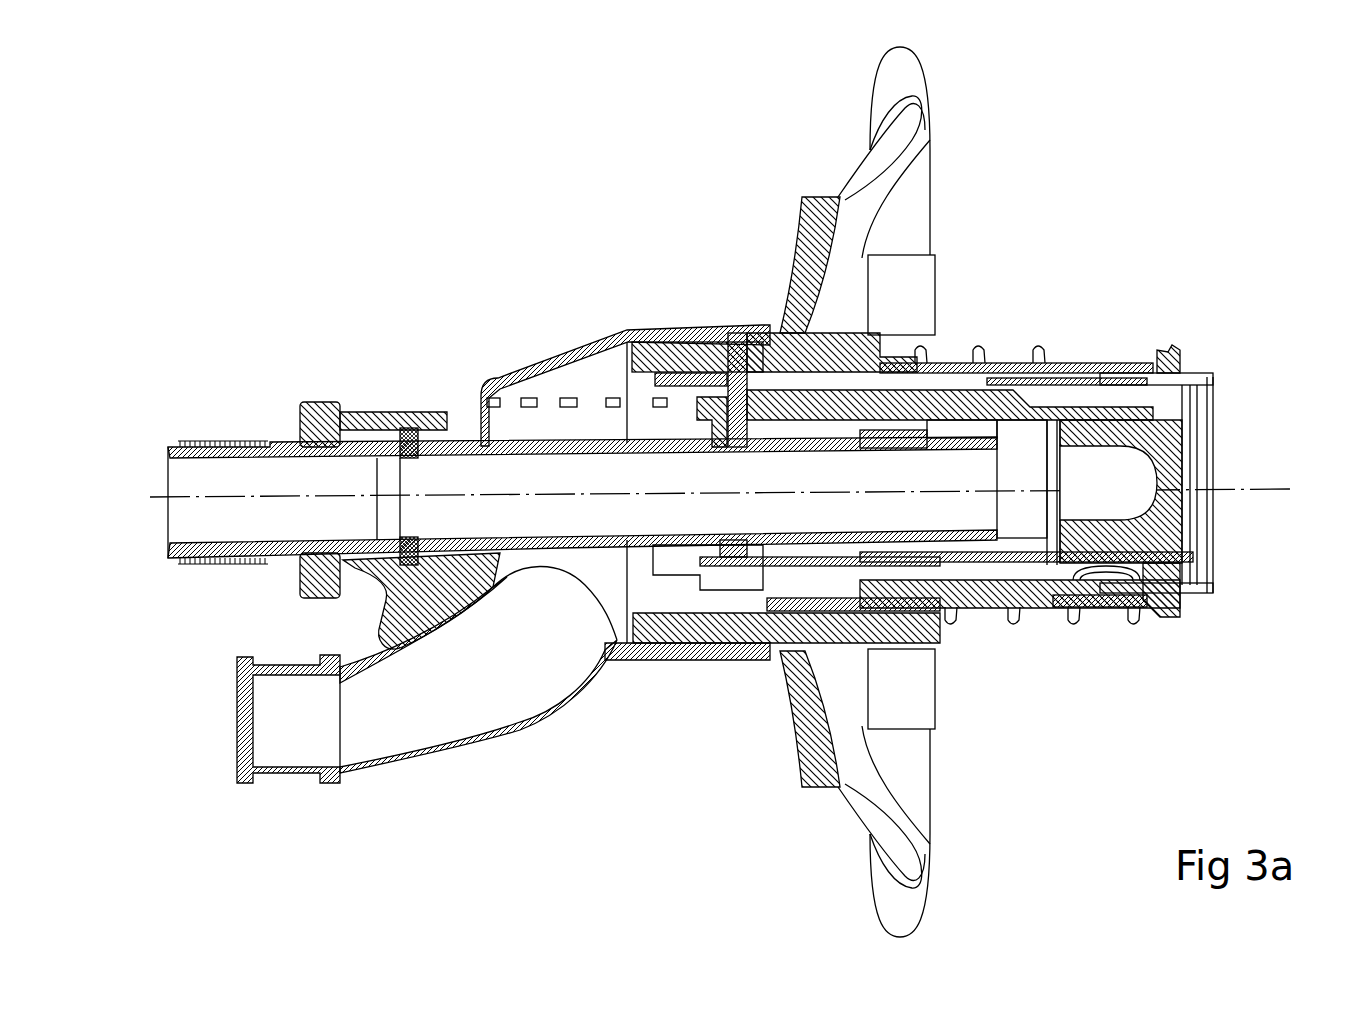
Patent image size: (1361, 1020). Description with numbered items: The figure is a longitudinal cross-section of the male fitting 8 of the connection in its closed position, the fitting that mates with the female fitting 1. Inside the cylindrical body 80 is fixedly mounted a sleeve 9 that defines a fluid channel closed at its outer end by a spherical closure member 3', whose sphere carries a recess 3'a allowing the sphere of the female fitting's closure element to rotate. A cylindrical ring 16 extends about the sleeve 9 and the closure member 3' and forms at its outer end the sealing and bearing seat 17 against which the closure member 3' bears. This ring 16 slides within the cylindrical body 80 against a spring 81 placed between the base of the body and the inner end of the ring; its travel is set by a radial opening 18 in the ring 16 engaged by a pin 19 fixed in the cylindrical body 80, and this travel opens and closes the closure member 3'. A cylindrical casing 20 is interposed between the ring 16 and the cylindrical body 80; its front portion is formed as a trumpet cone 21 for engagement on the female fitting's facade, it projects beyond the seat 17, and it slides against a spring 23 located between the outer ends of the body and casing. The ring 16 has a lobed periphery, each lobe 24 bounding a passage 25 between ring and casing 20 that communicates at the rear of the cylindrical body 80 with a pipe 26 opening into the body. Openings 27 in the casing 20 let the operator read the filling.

The female fitting 1 is at (480, 477).
The male fitting 8 is at (598, 256).
The sleeve 9 is at (520, 443).
The spring 81 is at (572, 395).
The pin 19 is at (732, 365).
The opening 18 is at (745, 337).
The spring 23 is at (862, 178).
The lobe 24 is at (960, 395).
The openings 27 is at (1075, 370).
The cylindrical casing 20 is at (1118, 390).
The trumpet cone 21 is at (1190, 392).
The recess 3'a is at (1246, 485).
The spherical closure member 3' is at (737, 495).
The sealing and bearing seat 17 is at (1175, 555).
The passage 25 is at (968, 570).
The cylindrical ring 16 is at (1057, 560).
The cylindrical body 80 is at (695, 662).
The pipe 26 is at (490, 683).